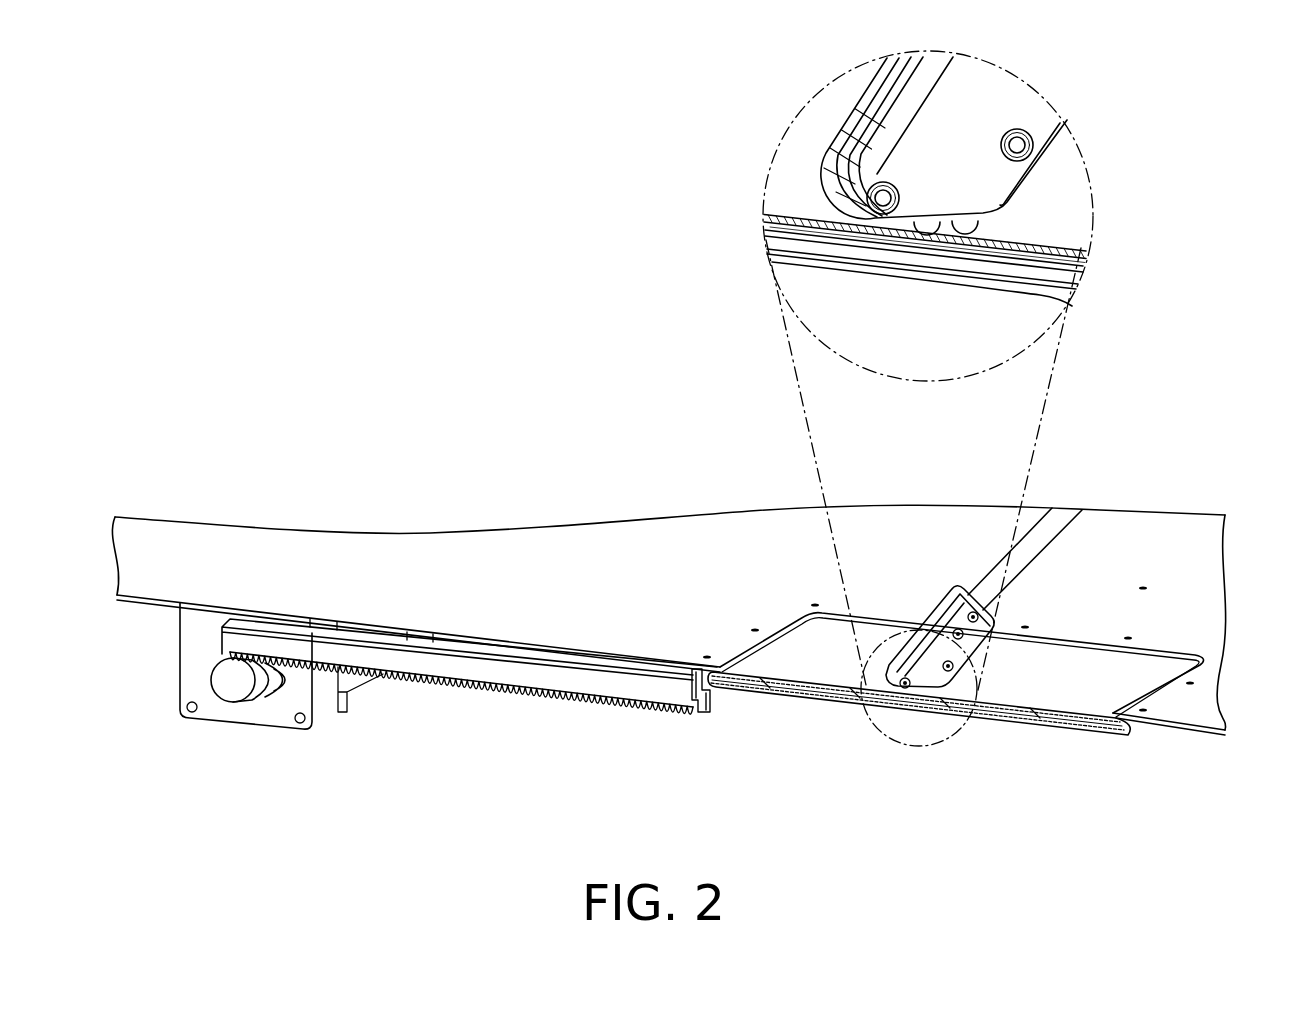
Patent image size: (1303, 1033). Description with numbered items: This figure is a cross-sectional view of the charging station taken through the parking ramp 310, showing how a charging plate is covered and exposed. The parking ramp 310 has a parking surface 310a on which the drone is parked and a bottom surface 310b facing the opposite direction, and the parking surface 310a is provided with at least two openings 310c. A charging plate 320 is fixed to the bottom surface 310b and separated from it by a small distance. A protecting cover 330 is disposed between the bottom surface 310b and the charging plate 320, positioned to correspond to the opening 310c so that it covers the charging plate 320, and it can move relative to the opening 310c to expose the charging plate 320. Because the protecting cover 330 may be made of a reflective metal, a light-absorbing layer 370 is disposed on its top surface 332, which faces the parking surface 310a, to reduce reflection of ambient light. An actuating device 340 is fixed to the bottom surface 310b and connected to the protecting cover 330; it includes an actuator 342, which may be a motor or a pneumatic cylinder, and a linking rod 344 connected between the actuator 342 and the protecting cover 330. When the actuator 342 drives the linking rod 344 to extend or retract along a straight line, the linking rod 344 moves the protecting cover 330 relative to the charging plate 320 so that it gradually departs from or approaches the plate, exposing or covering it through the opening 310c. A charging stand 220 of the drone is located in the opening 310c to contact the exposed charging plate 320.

The parking ramp 310 is at (118, 133).
The parking surface 310a is at (229, 546).
The bottom surface 310b is at (118, 658).
The opening 310c is at (767, 642).
The charging stand 220 is at (983, 198).
The charging plate 320 is at (995, 732).
The protecting cover 330 is at (1080, 736).
The top surface 332 is at (1010, 245).
The light-absorbing layer 370 is at (765, 216).
The actuating device 340 is at (448, 736).
The actuator 342 is at (280, 720).
The linking rod 344 is at (355, 654).